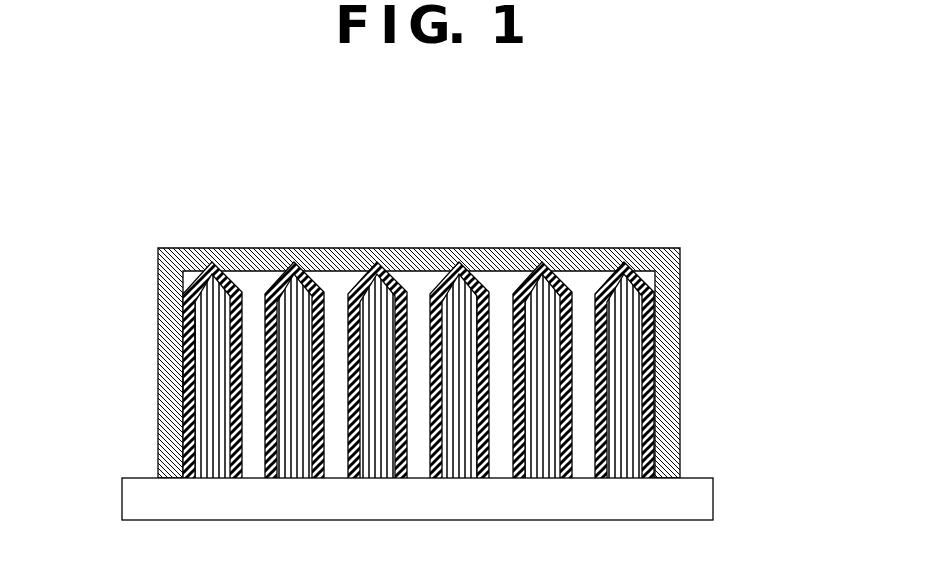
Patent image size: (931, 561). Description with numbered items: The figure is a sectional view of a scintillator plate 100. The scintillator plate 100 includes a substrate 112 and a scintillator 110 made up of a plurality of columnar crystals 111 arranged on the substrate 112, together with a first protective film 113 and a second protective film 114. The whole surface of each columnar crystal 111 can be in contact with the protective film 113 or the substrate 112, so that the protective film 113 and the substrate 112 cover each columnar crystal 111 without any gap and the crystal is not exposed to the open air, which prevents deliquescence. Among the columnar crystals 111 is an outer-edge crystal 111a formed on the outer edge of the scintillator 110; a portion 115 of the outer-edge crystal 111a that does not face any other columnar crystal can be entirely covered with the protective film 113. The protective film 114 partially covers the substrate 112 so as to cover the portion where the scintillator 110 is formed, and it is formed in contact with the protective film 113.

The scintillator plate 100 is at (230, 210).
The scintillator 110 is at (655, 237).
The columnar crystal 111 is at (639, 406).
The outer-edge crystal 111a is at (200, 340).
The substrate 112 is at (702, 496).
The protective film 113 is at (656, 357).
The protective film 114 is at (677, 310).
The portion of the outer-edge crystal 115 is at (185, 381).